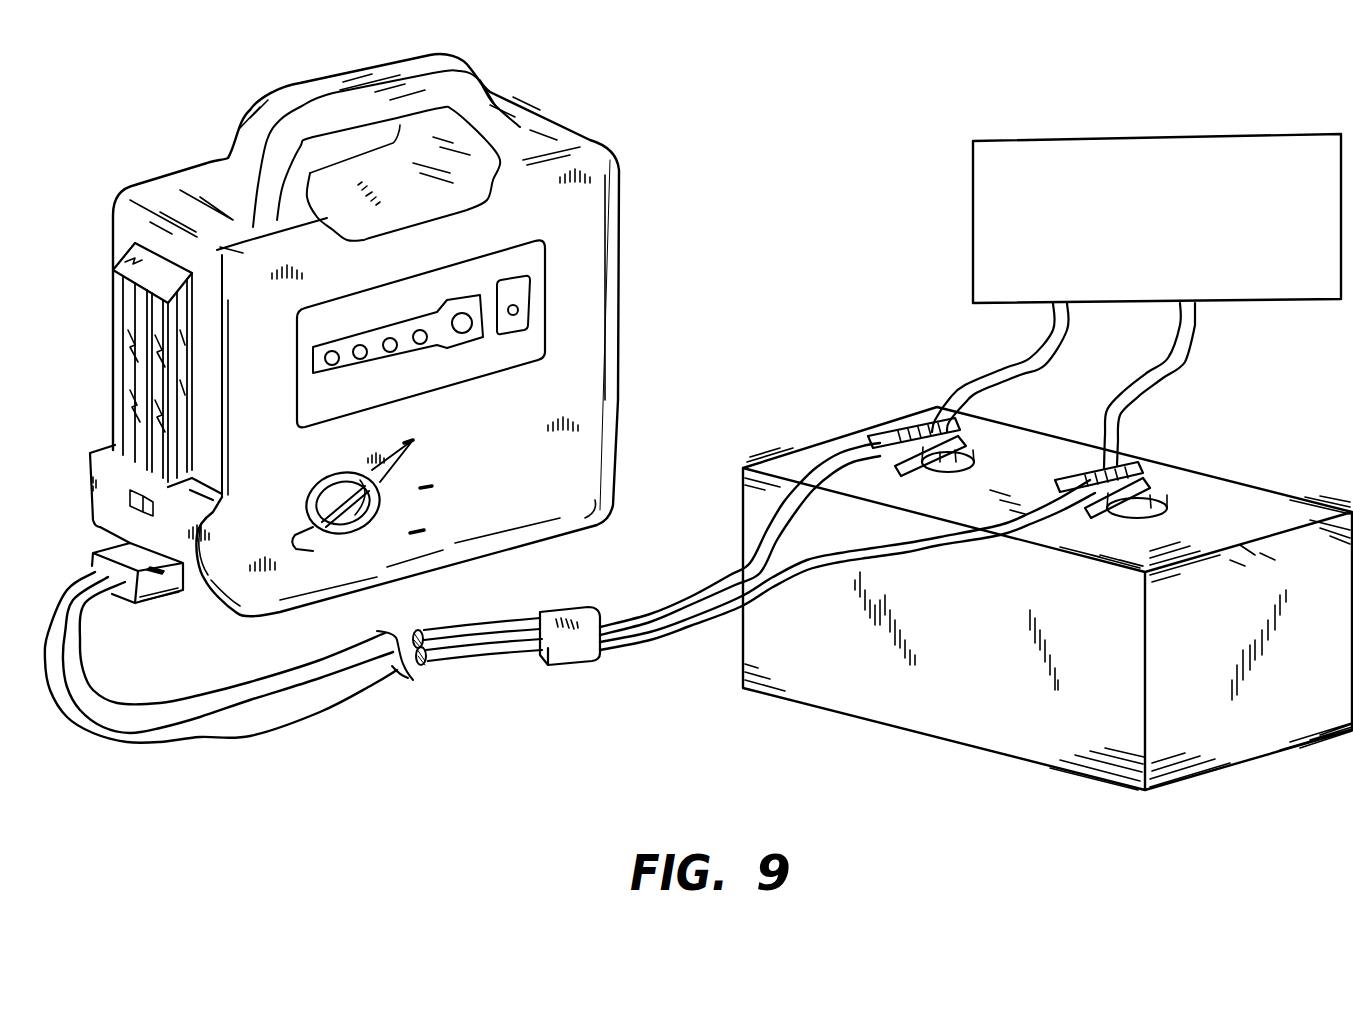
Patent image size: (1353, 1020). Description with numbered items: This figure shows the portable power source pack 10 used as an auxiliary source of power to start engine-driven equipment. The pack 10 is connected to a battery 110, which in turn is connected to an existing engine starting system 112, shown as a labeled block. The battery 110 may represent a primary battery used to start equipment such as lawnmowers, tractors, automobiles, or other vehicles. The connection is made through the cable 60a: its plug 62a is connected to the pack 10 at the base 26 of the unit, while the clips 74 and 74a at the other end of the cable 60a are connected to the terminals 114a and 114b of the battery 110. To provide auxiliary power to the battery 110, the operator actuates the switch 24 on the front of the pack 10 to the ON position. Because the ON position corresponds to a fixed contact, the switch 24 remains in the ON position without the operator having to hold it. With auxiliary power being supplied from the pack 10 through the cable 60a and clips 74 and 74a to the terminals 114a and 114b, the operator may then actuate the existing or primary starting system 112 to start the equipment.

The pack 10 is at (668, 84).
The switch 24 is at (313, 548).
The base of unit 26 is at (103, 530).
The cable 60a is at (490, 695).
The plug 62a is at (163, 590).
The clip 74 is at (887, 433).
The clip 74a is at (1157, 497).
The battery 110 is at (905, 718).
The existing engine starting system 112 is at (983, 205).
The terminal 114a is at (977, 457).
The terminal 114b is at (1163, 500).